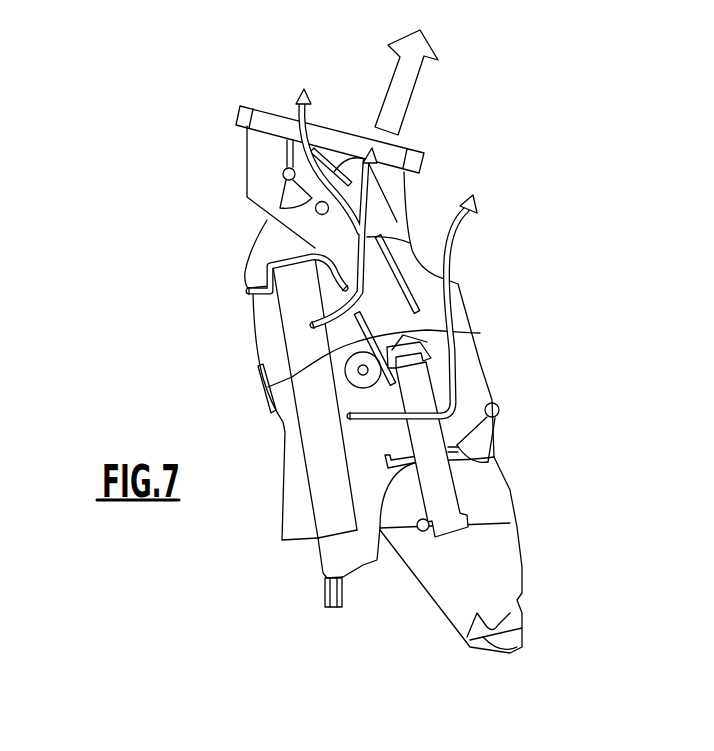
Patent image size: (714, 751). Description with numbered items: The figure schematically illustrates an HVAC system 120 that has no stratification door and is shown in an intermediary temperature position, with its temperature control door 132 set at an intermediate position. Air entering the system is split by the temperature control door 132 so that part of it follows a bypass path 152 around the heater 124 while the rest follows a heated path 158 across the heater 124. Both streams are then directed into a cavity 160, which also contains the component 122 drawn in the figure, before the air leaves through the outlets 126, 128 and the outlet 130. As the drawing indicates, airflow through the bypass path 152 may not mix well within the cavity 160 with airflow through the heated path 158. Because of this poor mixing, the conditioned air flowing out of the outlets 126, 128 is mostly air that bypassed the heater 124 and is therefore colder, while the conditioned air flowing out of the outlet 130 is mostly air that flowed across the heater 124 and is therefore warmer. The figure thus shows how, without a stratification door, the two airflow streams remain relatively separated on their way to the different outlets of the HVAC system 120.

The HVAC system 120 is at (282, 389).
The first housing portion 122 is at (327, 497).
The heater 124 is at (440, 487).
The outlet 126 is at (270, 116).
The outlet 128 is at (397, 150).
The outlet 130 is at (452, 282).
The temperature control door 132 is at (268, 387).
The bypass path 152 is at (415, 234).
The heated path 158 is at (455, 399).
The cavity 160 is at (457, 307).